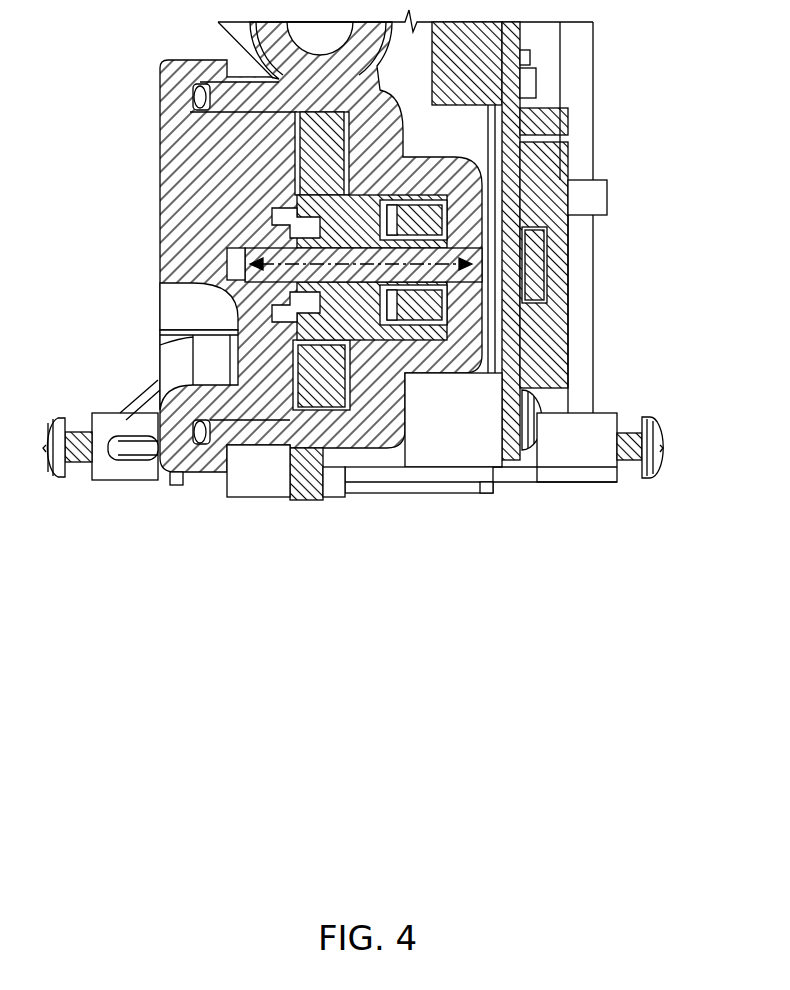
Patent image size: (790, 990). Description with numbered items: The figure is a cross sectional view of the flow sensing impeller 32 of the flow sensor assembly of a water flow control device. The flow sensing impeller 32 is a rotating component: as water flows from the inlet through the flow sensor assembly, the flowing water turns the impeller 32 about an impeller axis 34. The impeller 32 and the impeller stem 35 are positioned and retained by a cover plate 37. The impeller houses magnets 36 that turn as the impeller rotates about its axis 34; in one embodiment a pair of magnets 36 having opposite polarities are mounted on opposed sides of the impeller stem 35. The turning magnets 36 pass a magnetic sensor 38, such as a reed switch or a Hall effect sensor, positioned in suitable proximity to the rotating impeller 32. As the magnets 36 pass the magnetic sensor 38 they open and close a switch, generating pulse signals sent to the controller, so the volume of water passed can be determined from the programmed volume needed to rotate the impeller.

The flow sensing impeller 32 is at (323, 395).
The impeller axis 34 is at (280, 266).
The impeller stem 35 is at (226, 247).
The magnets 36 is at (437, 220).
The cover plate 37 is at (198, 173).
The magnetic sensor 38 is at (568, 223).